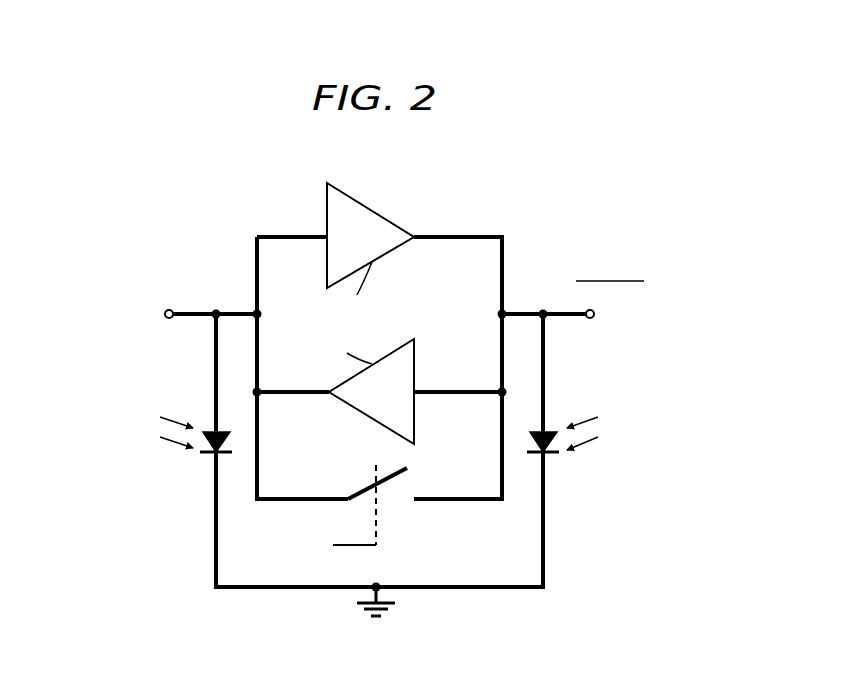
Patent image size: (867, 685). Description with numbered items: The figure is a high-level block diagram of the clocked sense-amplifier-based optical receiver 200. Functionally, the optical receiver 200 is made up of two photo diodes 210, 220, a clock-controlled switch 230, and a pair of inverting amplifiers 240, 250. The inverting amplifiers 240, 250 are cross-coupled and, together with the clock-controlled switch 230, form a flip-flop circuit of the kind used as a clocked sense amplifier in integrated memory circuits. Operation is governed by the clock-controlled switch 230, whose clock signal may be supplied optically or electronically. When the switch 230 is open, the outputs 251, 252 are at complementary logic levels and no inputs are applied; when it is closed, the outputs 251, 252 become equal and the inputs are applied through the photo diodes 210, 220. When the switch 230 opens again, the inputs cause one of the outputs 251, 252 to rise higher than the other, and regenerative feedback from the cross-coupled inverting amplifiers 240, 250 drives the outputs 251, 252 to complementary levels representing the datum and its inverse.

The optical receiver 200 is at (583, 183).
The photo diode 210 is at (202, 455).
The photo diode 220 is at (558, 457).
The clock-controlled switch 230 is at (372, 486).
The inverting amplifier 240 is at (372, 205).
The inverting amplifier 250 is at (415, 365).
The output 251 is at (202, 317).
The output 252 is at (558, 318).